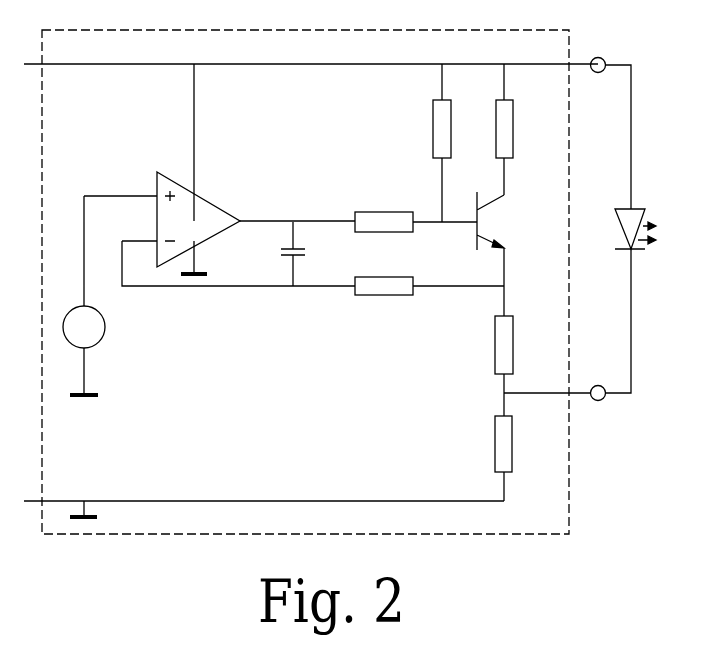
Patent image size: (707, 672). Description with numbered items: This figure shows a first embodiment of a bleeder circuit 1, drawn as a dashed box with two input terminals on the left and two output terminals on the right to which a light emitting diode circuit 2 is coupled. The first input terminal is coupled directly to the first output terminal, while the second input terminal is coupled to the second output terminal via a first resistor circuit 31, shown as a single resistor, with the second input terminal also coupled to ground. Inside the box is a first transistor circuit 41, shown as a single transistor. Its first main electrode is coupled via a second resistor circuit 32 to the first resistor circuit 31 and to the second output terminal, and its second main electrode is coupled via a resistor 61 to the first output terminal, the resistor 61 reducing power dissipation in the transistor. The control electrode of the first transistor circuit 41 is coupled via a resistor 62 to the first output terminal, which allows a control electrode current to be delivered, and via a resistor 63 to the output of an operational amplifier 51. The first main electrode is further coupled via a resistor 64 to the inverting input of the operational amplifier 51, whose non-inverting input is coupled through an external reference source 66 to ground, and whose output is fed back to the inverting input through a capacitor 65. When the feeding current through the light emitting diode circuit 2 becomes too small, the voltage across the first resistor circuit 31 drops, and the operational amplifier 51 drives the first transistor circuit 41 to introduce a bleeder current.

The bleeder circuit 1 is at (544, 534).
The light emitting diode circuit 2 is at (635, 245).
The first resistor circuit 31 is at (520, 458).
The second resistor circuit 32 is at (520, 366).
The first transistor circuit 41 is at (501, 254).
The operational amplifier 51 is at (219, 185).
The resistor 61 is at (521, 129).
The resistor 62 is at (426, 143).
The resistor 63 is at (416, 207).
The resistor 64 is at (398, 303).
The capacitor 65 is at (308, 254).
The external reference source 66 is at (101, 350).